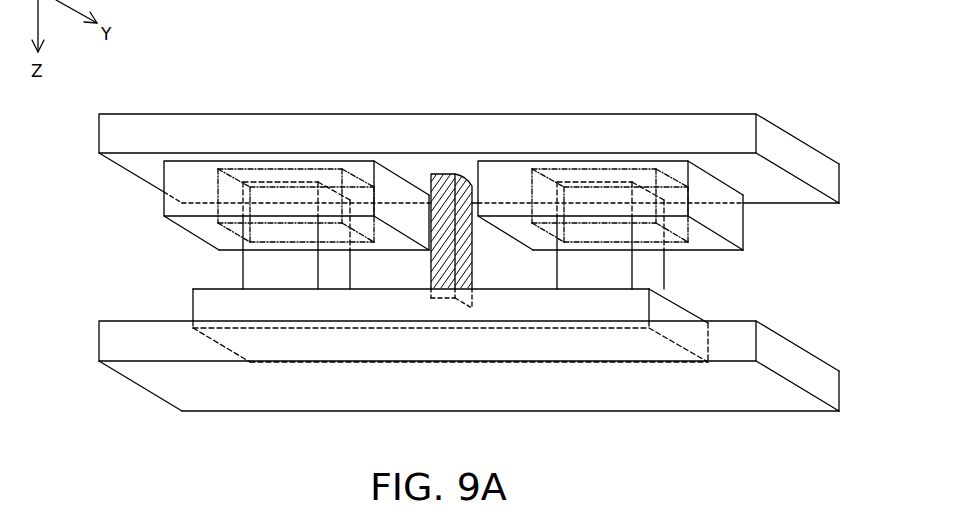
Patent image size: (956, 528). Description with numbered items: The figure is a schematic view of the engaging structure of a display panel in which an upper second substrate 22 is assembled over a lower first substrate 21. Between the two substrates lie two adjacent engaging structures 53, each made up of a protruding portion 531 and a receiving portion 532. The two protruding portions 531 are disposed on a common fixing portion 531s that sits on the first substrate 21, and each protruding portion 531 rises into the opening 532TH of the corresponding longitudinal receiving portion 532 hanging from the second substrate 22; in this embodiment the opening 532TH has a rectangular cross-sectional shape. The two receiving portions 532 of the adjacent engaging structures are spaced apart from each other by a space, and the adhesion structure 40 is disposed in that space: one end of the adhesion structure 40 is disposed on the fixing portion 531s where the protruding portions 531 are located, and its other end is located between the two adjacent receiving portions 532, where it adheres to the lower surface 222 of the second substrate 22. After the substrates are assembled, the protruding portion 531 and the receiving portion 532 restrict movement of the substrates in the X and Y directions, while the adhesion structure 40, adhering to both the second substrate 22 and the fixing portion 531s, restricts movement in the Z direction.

The first substrate 21 is at (108, 346).
The second substrate 22 is at (108, 138).
The lower surface of second substrate 222 is at (762, 180).
The adhesion structure 40 is at (445, 278).
The engaging structure 53 is at (92, 190).
The protruding portion 531 is at (243, 273).
The fixing portion 531s is at (210, 307).
The receiving portion 532 is at (170, 206).
The opening 532TH is at (242, 172).